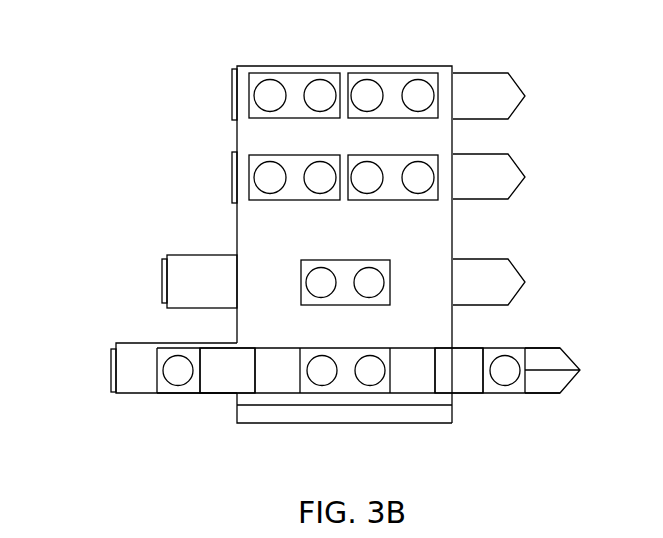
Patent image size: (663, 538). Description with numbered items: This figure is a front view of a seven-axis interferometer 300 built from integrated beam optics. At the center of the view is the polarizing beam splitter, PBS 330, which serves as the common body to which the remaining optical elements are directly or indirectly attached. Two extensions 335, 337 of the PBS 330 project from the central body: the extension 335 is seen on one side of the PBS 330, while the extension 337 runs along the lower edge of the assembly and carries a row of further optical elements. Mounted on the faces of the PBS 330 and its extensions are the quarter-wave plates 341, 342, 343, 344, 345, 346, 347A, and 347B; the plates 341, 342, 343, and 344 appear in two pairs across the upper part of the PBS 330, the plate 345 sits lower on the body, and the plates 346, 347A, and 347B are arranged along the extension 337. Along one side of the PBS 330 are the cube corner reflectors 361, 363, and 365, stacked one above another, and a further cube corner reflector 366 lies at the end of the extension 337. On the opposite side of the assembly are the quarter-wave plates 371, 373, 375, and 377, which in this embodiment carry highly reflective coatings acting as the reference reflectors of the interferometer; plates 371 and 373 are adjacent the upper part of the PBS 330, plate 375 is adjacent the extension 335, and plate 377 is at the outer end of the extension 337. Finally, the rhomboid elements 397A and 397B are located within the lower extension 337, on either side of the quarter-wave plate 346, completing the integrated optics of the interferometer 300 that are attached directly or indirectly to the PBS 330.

The 7-axis interferometer 300 is at (100, 24).
The PBS 330 is at (368, 242).
The extension of PBS 335 is at (197, 272).
The extension of PBS 337 is at (140, 343).
The quarter-wave plate 341 is at (300, 82).
The quarter-wave plate 342 is at (391, 85).
The quarter-wave plate 343 is at (310, 162).
The quarter-wave plate 344 is at (385, 160).
The quarter-wave plate 345 is at (301, 268).
The quarter-wave plate 346 is at (345, 348).
The quarter-wave plate 347A is at (178, 388).
The quarter-wave plate 347B is at (517, 388).
The cube corner reflector 361 is at (505, 90).
The cube corner reflector 363 is at (505, 175).
The cube corner reflector 365 is at (508, 270).
The cube corner reflector 366 is at (558, 360).
The quarter-wave plate 371 is at (232, 108).
The quarter-wave plate 373 is at (232, 195).
The quarter-wave plate 375 is at (162, 282).
The quarter-wave plate 377 is at (108, 373).
The rhomboid element 397A is at (225, 378).
The rhomboid element 397B is at (450, 370).